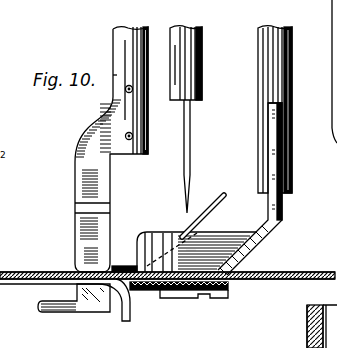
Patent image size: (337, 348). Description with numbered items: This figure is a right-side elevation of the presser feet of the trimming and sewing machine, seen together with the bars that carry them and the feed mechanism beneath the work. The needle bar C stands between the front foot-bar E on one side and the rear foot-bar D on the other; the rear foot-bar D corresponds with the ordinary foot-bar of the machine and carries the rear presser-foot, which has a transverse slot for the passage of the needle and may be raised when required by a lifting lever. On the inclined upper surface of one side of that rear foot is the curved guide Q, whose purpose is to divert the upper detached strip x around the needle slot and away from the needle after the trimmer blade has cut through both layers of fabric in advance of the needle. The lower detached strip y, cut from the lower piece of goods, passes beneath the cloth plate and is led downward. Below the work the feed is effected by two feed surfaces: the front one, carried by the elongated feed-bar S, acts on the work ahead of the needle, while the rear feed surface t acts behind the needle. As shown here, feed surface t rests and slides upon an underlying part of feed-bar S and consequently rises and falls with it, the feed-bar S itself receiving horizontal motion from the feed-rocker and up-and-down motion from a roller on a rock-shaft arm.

The front foot-bar E is at (113, 44).
The needle bar C is at (177, 33).
The rear foot-bar D is at (292, 71).
The throat plate a is at (213, 272).
The curved guide Q is at (193, 249).
The detached strip x is at (221, 200).
The detached strip y is at (131, 316).
The feed-bar S is at (58, 312).
The feed surface t is at (229, 289).